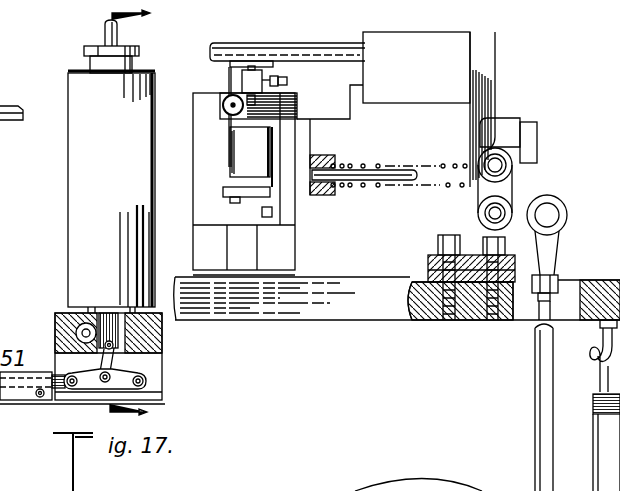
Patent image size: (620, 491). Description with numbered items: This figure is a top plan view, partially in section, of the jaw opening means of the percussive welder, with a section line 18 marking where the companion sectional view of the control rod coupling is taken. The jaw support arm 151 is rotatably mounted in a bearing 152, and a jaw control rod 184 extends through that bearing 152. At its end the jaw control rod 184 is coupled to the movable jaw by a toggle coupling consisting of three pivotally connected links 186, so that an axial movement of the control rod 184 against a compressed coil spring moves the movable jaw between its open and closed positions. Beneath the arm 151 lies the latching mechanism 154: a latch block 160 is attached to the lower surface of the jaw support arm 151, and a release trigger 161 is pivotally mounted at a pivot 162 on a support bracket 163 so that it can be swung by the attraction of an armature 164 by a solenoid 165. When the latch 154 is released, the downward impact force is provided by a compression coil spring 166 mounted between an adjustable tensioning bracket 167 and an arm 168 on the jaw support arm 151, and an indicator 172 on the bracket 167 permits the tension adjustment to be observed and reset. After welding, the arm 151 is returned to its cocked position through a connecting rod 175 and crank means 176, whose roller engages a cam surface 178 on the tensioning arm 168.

The section line 18 is at (145, 220).
The jaw support arm 151 is at (458, 80).
The bearing 152 is at (130, 253).
The latching mechanism 154 is at (300, 103).
The latch block 160 is at (238, 65).
The release trigger 161 is at (228, 76).
The pivot 162 is at (223, 107).
The support bracket 163 is at (200, 192).
The armature 164 is at (225, 147).
The solenoid 165 is at (258, 174).
The compression coil spring 166 is at (383, 187).
The adjustable tensioning bracket 167 is at (333, 164).
The arm 168 is at (483, 112).
The indicator 172 is at (508, 168).
The connecting rod 175 is at (540, 446).
The crank means 176 is at (557, 238).
The cam surface 178 is at (500, 142).
The jaw control rod 184 is at (117, 332).
The pivotally connected links 186 is at (127, 375).